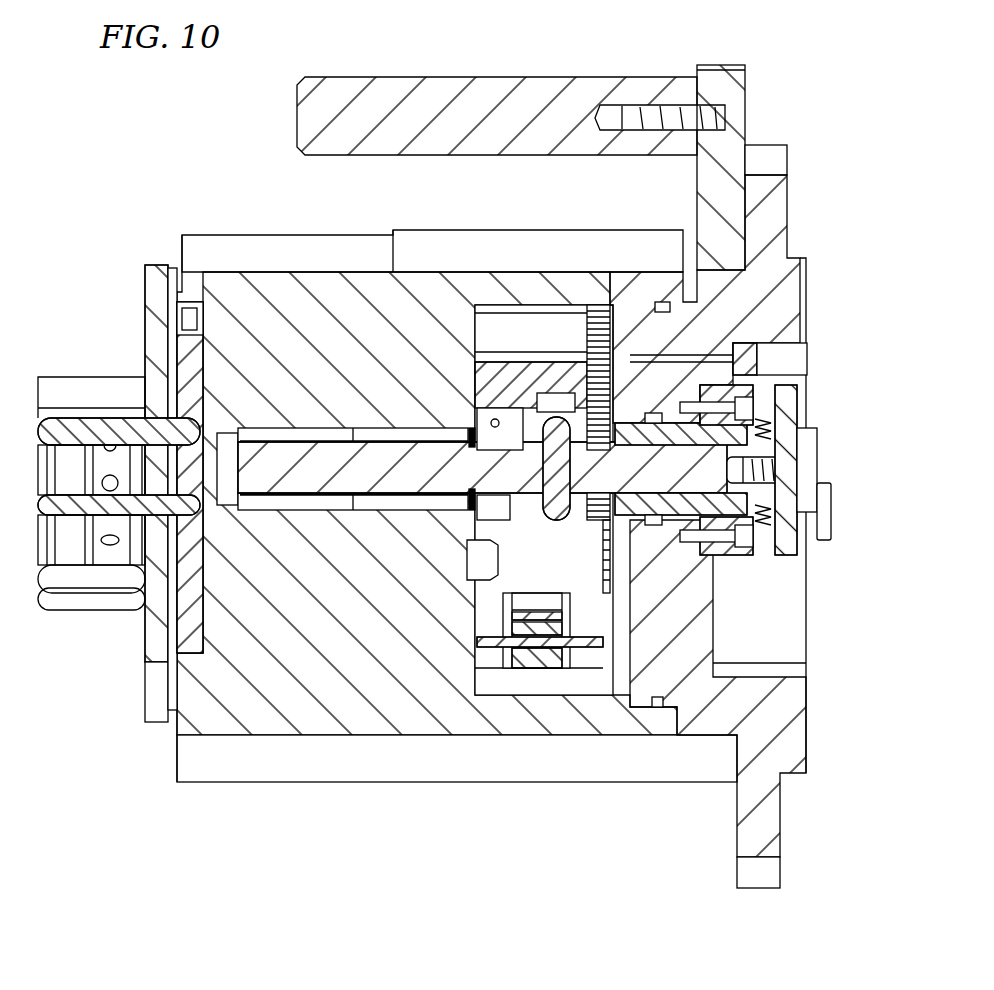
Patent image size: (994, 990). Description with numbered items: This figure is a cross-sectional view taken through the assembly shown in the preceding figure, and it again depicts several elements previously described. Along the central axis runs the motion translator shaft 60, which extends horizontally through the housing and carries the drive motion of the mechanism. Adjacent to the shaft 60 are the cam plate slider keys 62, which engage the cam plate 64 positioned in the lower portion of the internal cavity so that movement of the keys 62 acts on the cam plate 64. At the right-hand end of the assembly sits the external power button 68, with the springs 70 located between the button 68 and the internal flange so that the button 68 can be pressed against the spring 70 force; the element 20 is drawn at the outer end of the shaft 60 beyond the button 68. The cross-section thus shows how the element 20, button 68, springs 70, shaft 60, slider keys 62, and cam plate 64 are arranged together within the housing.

The motion translator shaft 60 is at (337, 458).
The cam plate slider keys 62 is at (560, 470).
The cam plate 64 is at (607, 630).
The external power button 68 is at (815, 453).
The springs 70 is at (762, 426).
The nut 20 is at (832, 512).